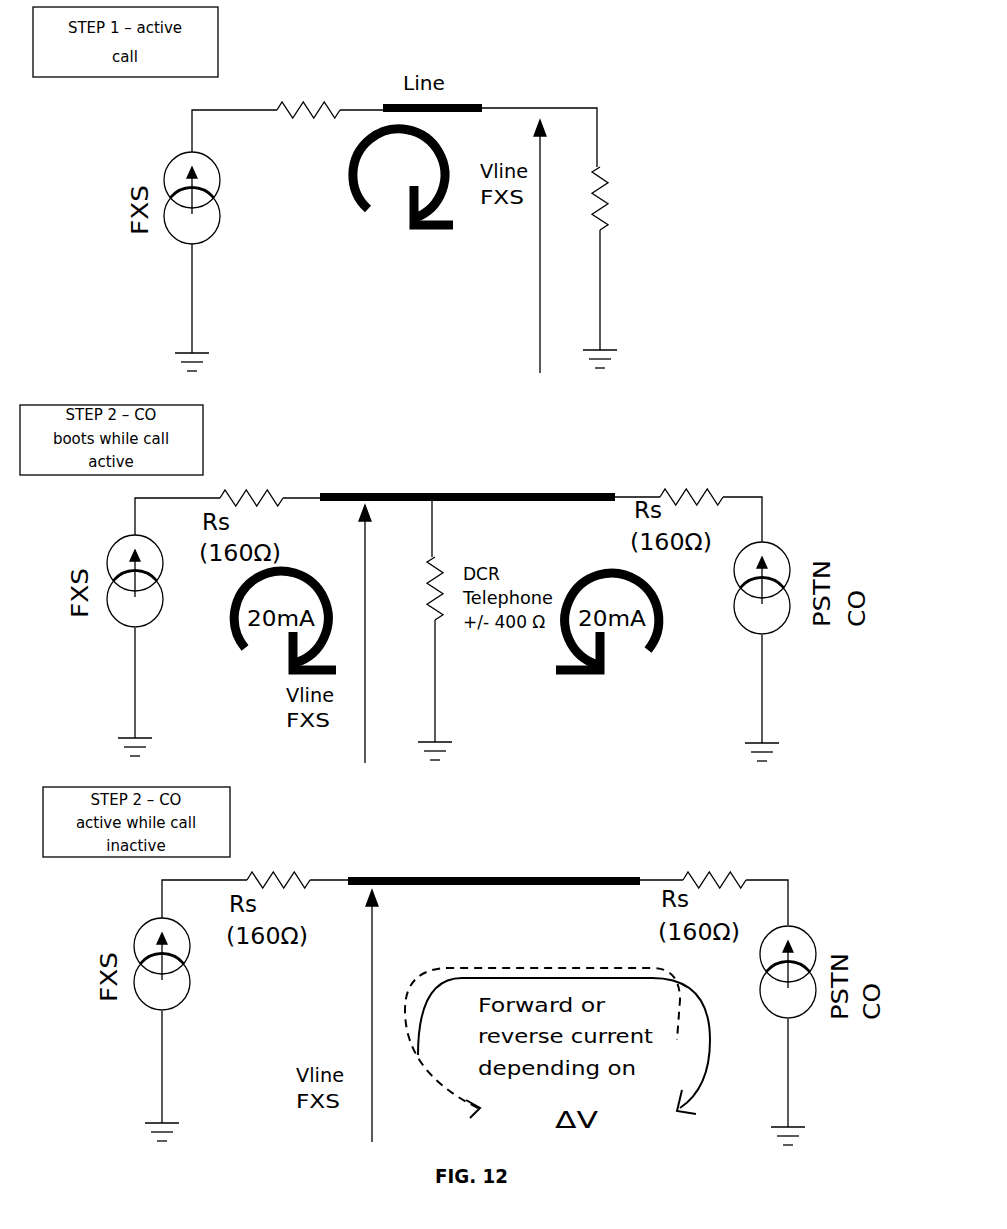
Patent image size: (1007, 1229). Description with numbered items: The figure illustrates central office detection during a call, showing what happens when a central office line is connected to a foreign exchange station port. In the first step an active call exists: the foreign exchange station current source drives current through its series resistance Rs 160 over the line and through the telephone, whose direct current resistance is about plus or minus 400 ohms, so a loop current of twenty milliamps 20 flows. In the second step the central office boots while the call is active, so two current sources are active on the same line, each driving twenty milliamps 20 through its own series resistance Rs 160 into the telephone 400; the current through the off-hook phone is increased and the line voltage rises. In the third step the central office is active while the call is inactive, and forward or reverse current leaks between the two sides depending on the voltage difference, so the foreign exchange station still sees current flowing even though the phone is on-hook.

The series resistor Rs (160 ohm) 160 is at (299, 141).
The DCR telephone load (+/- 400 ohm) 400 is at (676, 210).
The 20 mA loop current 20 is at (403, 177).